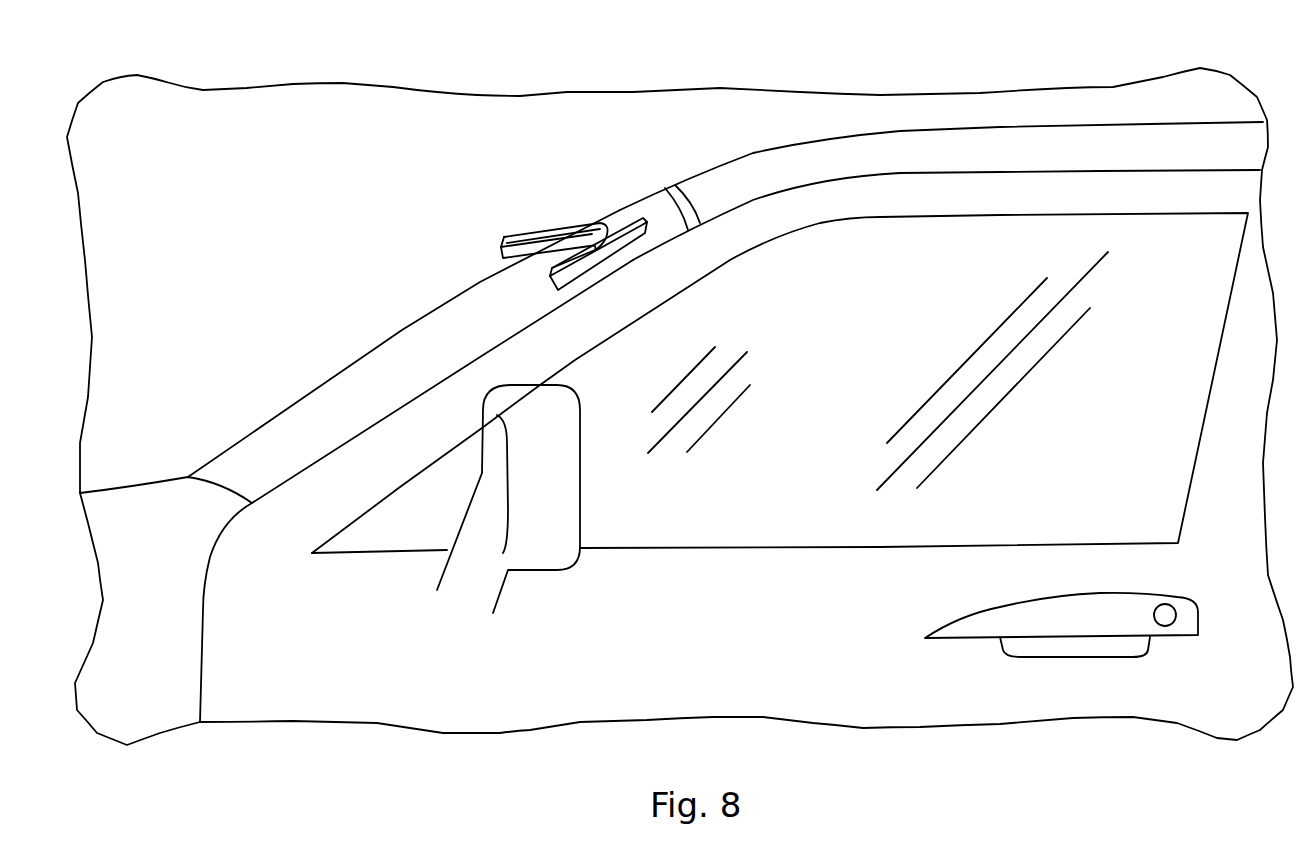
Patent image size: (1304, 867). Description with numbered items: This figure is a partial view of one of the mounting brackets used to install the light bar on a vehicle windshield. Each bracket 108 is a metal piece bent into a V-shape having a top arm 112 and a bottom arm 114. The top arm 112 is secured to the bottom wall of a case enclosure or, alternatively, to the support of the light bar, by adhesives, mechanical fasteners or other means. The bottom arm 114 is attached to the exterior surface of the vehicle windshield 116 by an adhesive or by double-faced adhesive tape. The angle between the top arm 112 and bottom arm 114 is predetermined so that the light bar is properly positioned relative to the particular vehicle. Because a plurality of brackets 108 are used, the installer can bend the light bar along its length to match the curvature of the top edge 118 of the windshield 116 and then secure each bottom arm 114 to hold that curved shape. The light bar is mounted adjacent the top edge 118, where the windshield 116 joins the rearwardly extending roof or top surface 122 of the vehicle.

The bracket 108 is at (559, 163).
The top arm 112 is at (518, 240).
The bottom arm 114 is at (630, 228).
The vehicle windshield 116 is at (457, 313).
The top edge of the windshield 118 is at (682, 197).
The roof or top surface of the vehicle 122 is at (803, 155).